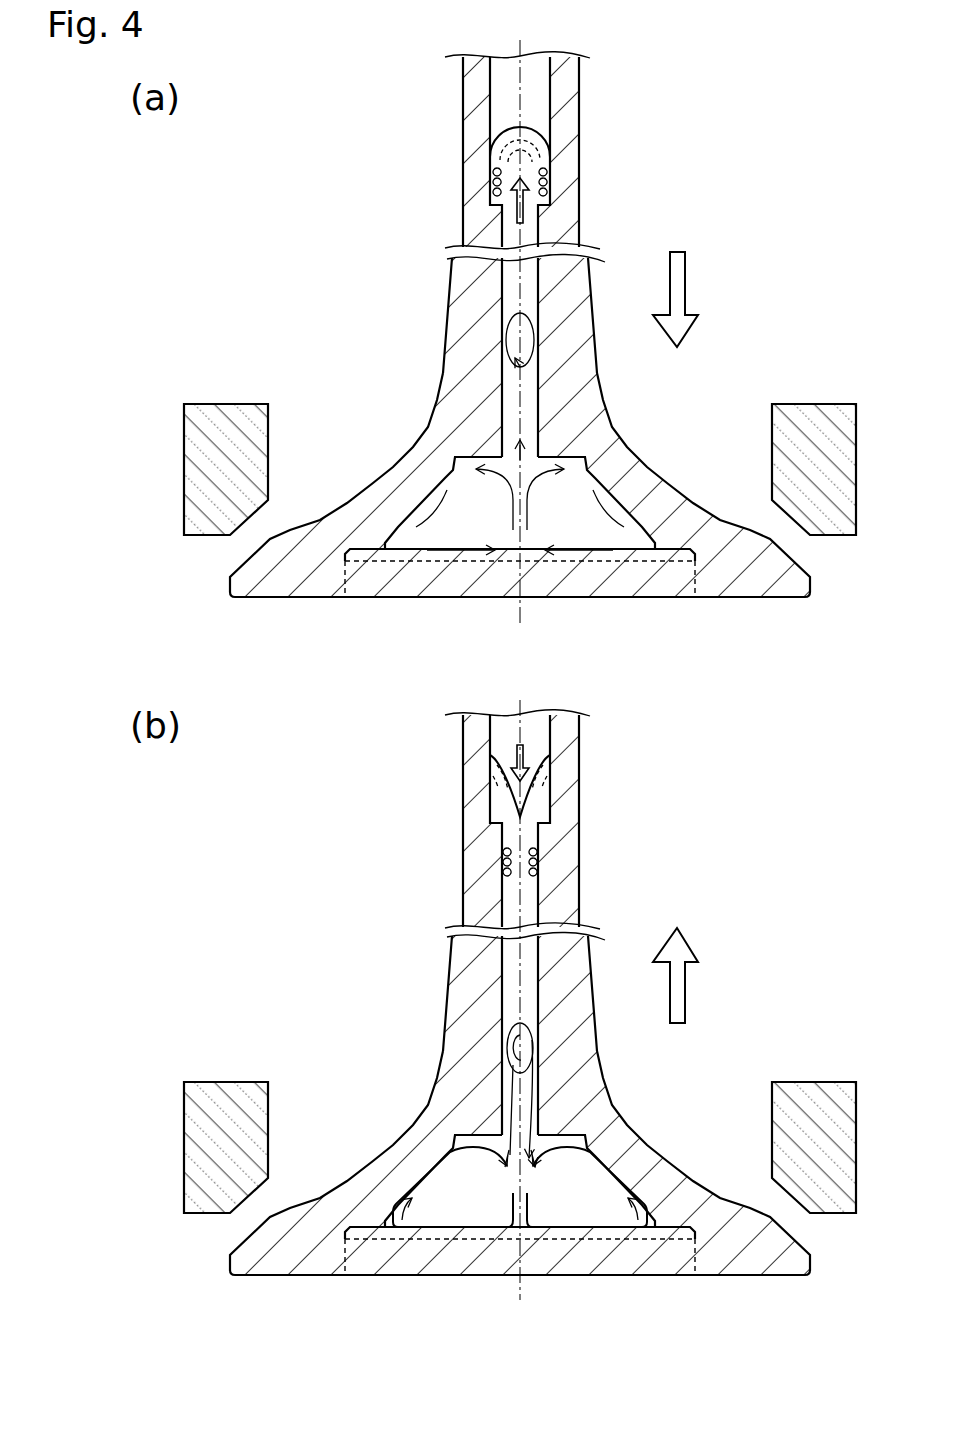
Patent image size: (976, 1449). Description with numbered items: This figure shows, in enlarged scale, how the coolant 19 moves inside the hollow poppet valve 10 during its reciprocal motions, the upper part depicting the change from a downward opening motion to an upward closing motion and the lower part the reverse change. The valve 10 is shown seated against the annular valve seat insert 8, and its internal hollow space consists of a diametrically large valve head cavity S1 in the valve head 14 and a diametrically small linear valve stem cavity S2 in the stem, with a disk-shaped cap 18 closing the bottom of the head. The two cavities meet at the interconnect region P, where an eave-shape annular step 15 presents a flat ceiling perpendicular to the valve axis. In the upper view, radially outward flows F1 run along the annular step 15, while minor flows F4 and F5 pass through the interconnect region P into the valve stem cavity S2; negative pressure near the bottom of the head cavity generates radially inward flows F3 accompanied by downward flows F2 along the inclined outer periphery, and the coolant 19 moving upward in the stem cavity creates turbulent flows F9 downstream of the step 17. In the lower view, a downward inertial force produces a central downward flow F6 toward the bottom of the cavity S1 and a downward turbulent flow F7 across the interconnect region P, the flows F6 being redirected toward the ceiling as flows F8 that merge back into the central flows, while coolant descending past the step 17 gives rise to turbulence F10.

The annular valve seat insert 8 is at (833, 528).
The hollow poppet valve 10 is at (422, 301).
The valve head 14 is at (302, 598).
The eave-shape annular step 15 is at (543, 450).
The step 17 is at (503, 206).
The cap 18 is at (615, 587).
The coolant 19 is at (497, 137).
The interconnect region P is at (497, 448).
The valve head cavity S1 is at (407, 553).
The valve stem cavity S2 is at (507, 305).
The radially outward flows F1 is at (522, 499).
The downward flows F2 is at (414, 528).
The radially inward flows F3 is at (520, 538).
The minor flow F4 is at (521, 437).
The minor flow F5 is at (521, 347).
The downward flow F6 is at (520, 1213).
The downward turbulent flow F7 is at (520, 1103).
The flows along the ceiling F8 is at (524, 1164).
The turbulent flows F9 is at (548, 172).
The turbulence F10 is at (535, 853).